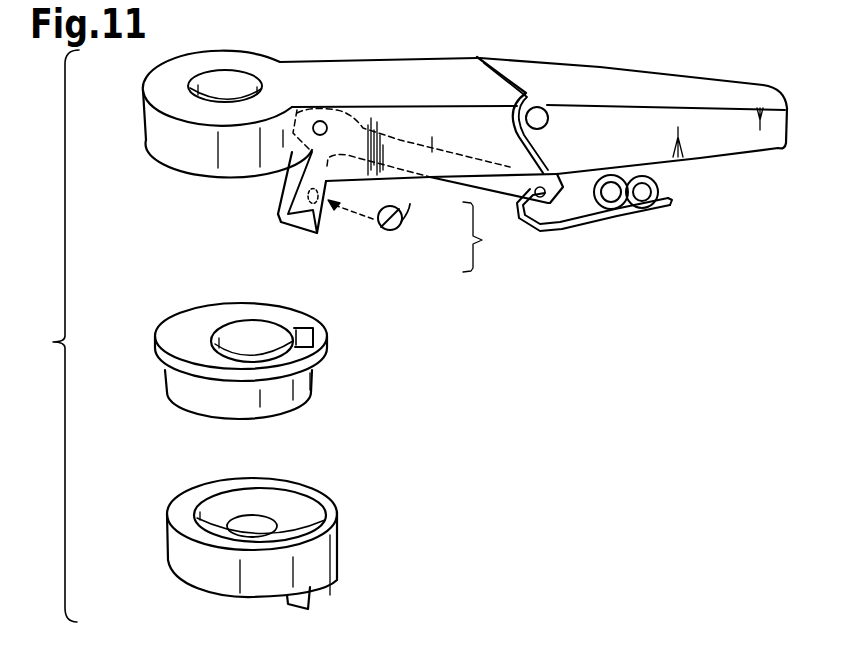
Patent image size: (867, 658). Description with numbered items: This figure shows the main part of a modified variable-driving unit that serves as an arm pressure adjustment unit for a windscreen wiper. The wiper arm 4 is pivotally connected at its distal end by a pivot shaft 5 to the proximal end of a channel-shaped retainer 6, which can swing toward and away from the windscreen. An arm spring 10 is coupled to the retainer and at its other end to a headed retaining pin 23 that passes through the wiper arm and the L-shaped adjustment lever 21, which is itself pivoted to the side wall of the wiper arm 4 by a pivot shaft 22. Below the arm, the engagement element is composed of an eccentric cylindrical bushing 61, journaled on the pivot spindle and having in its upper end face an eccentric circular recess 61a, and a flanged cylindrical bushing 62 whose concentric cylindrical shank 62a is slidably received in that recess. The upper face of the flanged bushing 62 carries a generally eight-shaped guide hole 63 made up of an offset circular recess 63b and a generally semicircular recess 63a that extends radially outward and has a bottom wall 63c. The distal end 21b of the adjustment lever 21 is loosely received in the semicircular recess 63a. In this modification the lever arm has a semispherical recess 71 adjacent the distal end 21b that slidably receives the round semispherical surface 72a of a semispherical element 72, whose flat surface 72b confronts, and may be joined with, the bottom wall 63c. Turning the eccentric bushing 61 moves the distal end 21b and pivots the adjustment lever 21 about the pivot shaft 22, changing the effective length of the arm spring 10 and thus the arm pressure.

The wiper arm 4 is at (372, 80).
The pivot shaft 5 is at (540, 116).
The retainer 6 is at (665, 92).
The arm spring 10 is at (627, 213).
The adjustment lever 21 is at (510, 190).
The distal end of adjustment lever 21b is at (280, 215).
The pivot shaft 22 is at (322, 121).
The retaining pin 23 is at (550, 200).
The eccentric cylindrical bushing 61 is at (298, 532).
The circular recess 61a is at (303, 502).
The flanged cylindrical bushing 62 is at (275, 352).
The concentric cylindrical shank 62a is at (307, 382).
The guide hole 63 is at (338, 323).
The semicircular recess 63a is at (303, 330).
The circular recess 63b is at (263, 327).
The bottom wall 63c is at (349, 354).
The semispherical recess 71 is at (322, 227).
The semispherical element 72 is at (451, 239).
The round semispherical surface 72a is at (404, 213).
The flat surface 72b is at (401, 224).